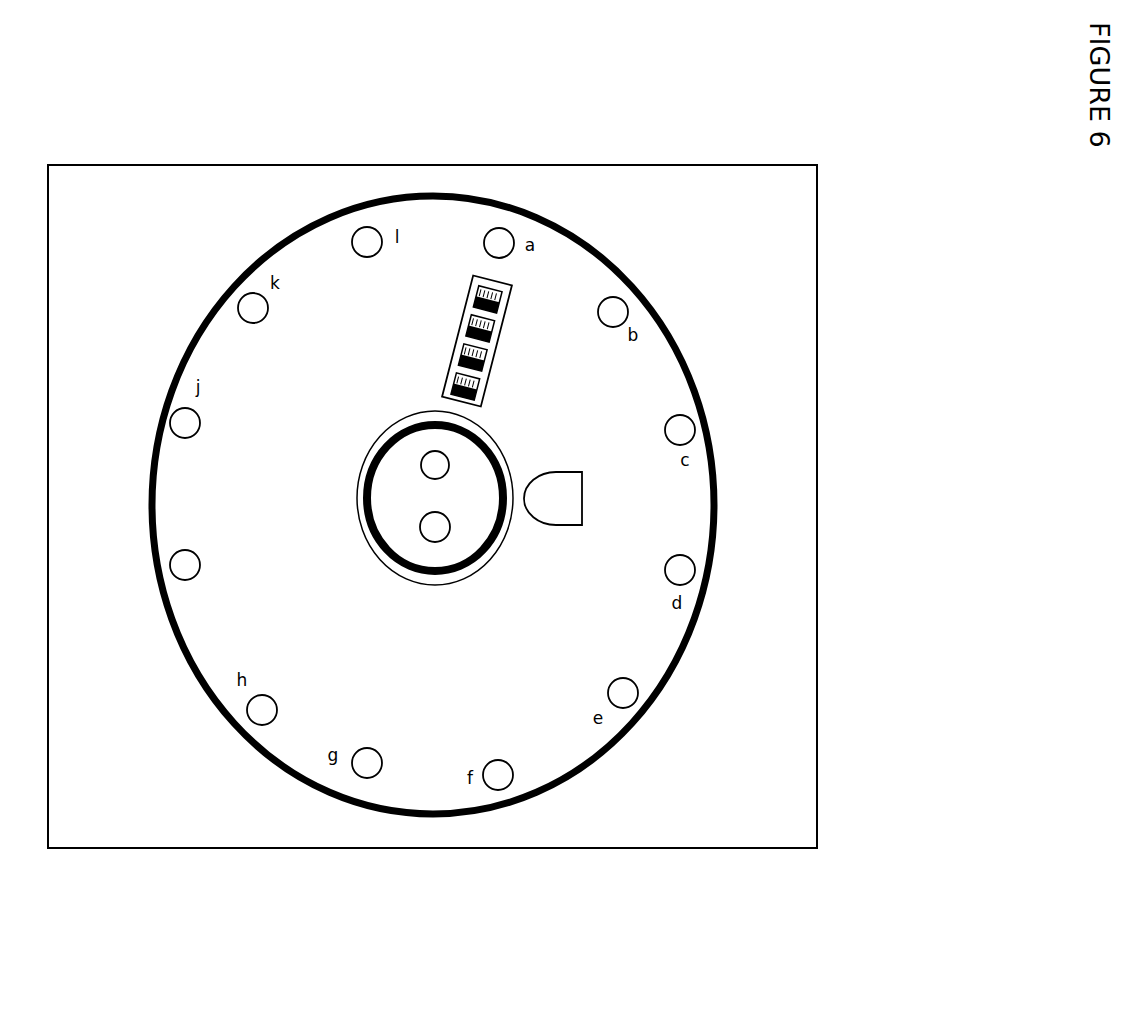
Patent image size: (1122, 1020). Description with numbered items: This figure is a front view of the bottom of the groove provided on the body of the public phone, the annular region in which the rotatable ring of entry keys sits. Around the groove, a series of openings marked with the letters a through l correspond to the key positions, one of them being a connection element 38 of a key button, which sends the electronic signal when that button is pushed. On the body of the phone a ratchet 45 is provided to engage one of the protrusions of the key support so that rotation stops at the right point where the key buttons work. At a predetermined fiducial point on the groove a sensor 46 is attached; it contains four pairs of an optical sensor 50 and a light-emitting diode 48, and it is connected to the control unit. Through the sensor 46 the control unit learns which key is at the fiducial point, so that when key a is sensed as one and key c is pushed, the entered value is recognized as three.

The connection element 38 is at (262, 712).
The ratchet 45 is at (563, 488).
The sensor 46 is at (580, 240).
The light-emitting diode 48 is at (496, 288).
The optical sensor 50 is at (497, 305).